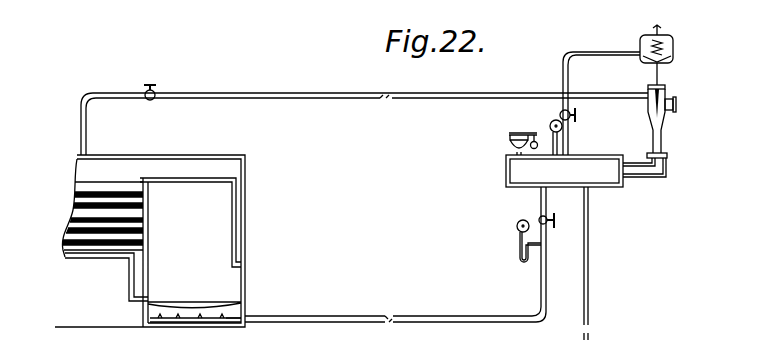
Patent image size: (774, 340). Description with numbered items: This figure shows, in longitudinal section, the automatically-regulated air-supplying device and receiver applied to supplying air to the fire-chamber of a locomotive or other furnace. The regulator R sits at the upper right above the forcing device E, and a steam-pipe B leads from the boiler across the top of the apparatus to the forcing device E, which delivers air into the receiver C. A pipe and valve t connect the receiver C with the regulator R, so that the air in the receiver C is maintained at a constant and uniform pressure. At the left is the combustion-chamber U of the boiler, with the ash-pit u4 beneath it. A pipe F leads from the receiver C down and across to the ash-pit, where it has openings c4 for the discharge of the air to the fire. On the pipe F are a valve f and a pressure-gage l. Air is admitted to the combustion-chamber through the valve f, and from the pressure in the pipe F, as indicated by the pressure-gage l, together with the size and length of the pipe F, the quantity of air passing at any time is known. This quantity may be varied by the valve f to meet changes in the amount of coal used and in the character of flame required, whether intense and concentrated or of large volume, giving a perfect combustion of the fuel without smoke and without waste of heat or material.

The steam-pipe B is at (364, 120).
The pipe and valve t is at (571, 137).
The receiver C is at (564, 153).
The forcing device E is at (662, 110).
The regulator R is at (676, 47).
The pipe F is at (514, 312).
The valve f is at (551, 214).
The pressure-gage l is at (514, 228).
The combustion-chamber U is at (190, 252).
The openings c4 is at (194, 312).
The ash-pit u4 is at (230, 311).